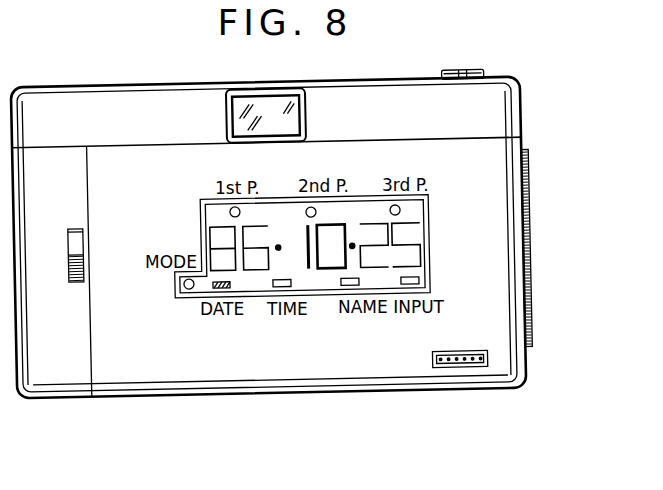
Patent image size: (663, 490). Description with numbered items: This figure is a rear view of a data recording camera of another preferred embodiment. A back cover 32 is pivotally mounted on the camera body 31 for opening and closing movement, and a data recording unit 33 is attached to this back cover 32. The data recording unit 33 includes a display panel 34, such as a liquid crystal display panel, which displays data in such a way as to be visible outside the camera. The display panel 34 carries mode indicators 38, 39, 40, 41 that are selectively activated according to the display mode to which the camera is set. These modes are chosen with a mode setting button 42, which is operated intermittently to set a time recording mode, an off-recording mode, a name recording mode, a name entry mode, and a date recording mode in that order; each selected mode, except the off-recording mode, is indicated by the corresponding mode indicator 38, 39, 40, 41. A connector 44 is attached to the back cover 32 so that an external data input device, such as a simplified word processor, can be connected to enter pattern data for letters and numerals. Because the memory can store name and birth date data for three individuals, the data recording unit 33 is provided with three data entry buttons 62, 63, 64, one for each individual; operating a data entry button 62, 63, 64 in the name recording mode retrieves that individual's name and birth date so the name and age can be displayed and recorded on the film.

The camera body 31 is at (522, 105).
The back cover 32 is at (117, 383).
The data recording unit 33 is at (428, 212).
The display panel 34 is at (358, 212).
The mode indicator 38 is at (210, 288).
The mode indicator 39 is at (276, 288).
The mode indicator 40 is at (345, 288).
The mode indicator 41 is at (418, 278).
The mode setting button 42 is at (183, 283).
The connector 44 is at (457, 367).
The data entry button 62 is at (230, 212).
The data entry button 63 is at (306, 209).
The data entry button 64 is at (400, 210).